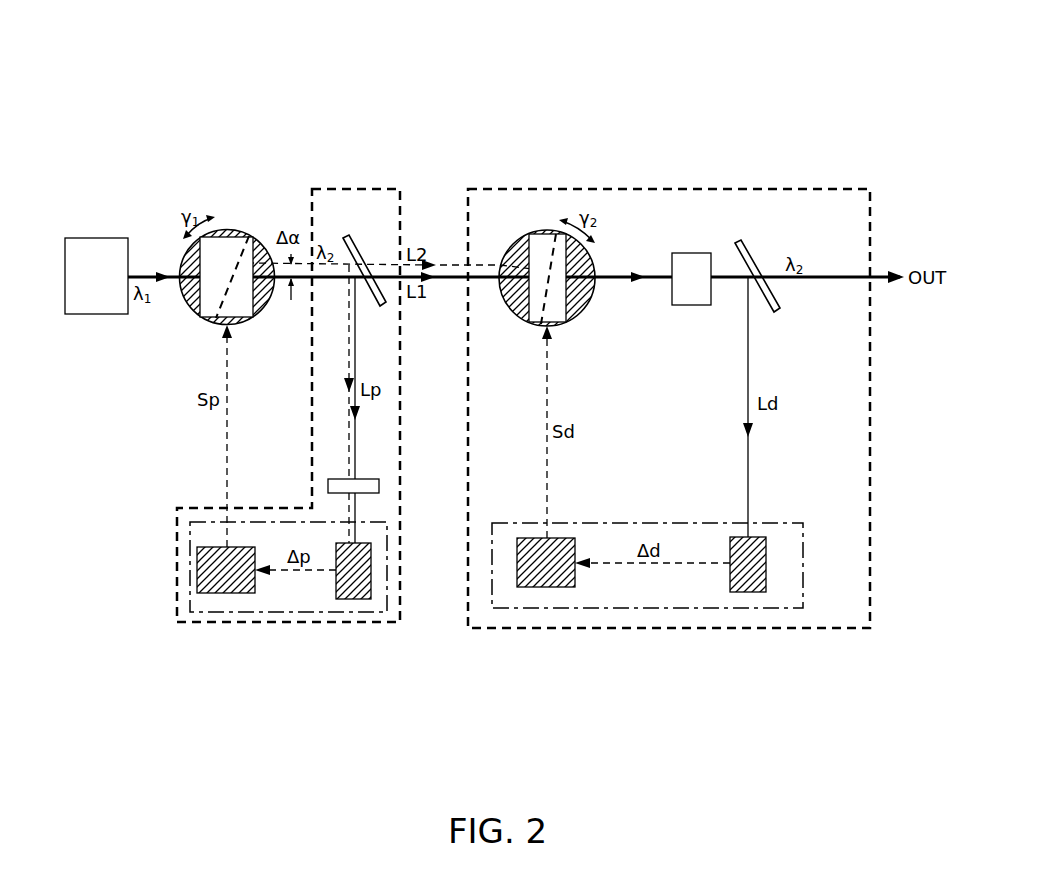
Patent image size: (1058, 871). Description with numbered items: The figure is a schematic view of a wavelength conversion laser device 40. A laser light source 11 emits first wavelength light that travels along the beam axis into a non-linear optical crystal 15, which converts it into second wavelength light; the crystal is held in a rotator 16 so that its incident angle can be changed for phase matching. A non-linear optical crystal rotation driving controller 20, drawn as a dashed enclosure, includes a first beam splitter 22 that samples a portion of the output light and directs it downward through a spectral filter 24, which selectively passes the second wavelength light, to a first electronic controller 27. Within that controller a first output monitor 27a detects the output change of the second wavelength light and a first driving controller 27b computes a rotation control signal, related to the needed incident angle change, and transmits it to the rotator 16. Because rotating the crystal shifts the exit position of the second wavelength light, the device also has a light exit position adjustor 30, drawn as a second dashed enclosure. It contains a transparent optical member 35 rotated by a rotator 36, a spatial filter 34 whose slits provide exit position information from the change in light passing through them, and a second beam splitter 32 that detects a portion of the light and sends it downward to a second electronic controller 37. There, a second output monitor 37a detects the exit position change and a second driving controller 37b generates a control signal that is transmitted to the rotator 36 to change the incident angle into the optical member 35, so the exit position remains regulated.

The wavelength conversion laser device 40 is at (426, 112).
The laser light source 11 is at (100, 238).
The non-linear optical crystal 15 is at (188, 252).
The rotator 16 is at (190, 302).
The first beam splitter 22 is at (348, 236).
The non-linear optical crystal rotation driving controller 20 is at (297, 622).
The spectral filter 24 is at (330, 480).
The first electronic controller 27 is at (197, 522).
The first output monitor 27a is at (358, 599).
The first driving controller 27b is at (210, 593).
The light exit position adjustor 30 is at (630, 628).
The transparent optical member 35 is at (541, 232).
The rotator 36 is at (514, 242).
The spatial filter 34 is at (698, 253).
The second beam splitter 32 is at (745, 254).
The second electronic controller 37 is at (803, 585).
The second output monitor 37a is at (726, 602).
The second driving controller 37b is at (530, 587).